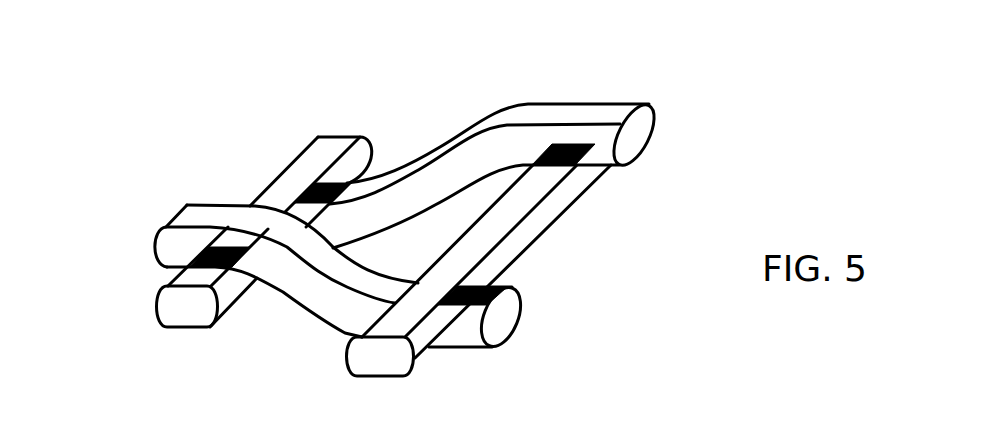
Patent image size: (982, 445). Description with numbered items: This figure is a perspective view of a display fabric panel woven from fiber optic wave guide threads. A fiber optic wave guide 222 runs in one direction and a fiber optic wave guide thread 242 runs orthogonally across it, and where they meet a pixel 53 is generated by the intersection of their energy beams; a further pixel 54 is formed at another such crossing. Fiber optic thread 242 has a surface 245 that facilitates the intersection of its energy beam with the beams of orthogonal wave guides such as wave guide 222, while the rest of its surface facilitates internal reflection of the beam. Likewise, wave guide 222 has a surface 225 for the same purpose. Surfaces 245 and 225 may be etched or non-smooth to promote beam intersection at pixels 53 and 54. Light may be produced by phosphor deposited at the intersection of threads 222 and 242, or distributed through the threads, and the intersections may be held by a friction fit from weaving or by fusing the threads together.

The fiber optic wave guide 222 is at (188, 204).
The pixel 53 is at (212, 246).
The pixel 54 is at (313, 185).
The fiber optic wave guide thread 242 is at (168, 286).
The surface 245 is at (186, 289).
The surface 225 is at (505, 292).